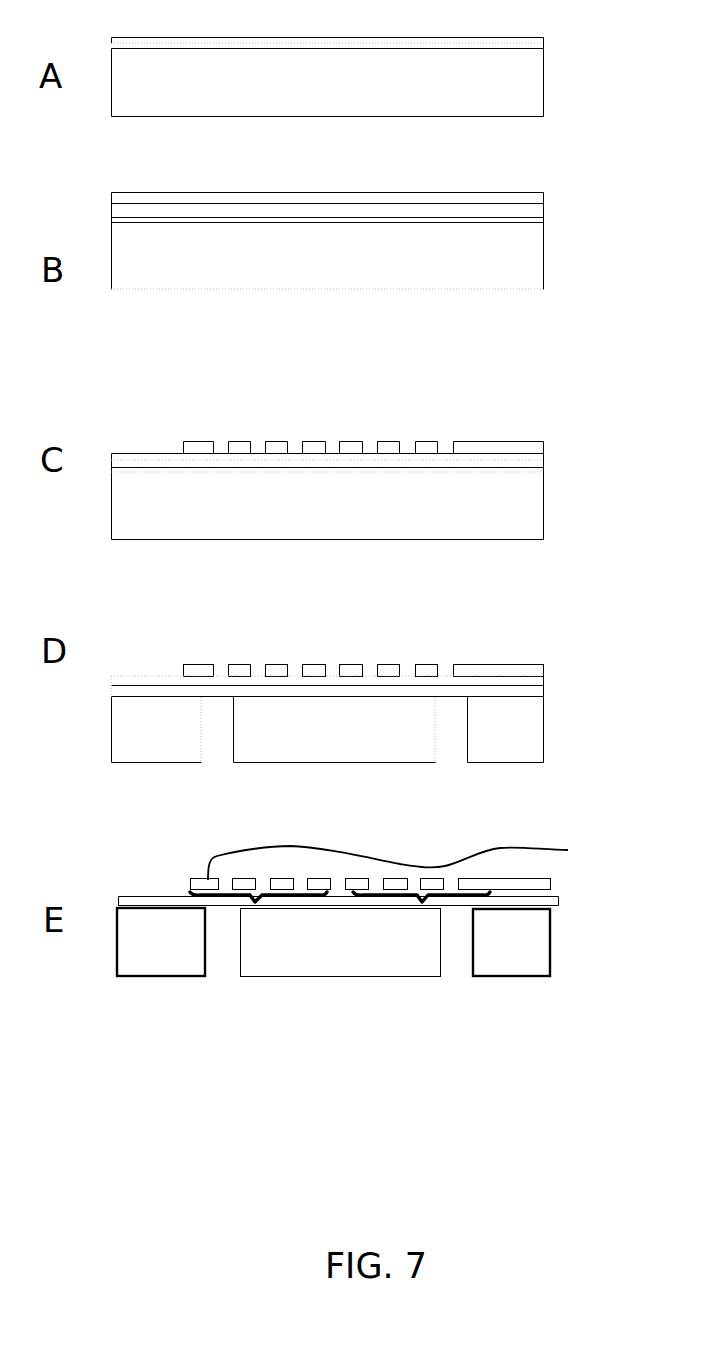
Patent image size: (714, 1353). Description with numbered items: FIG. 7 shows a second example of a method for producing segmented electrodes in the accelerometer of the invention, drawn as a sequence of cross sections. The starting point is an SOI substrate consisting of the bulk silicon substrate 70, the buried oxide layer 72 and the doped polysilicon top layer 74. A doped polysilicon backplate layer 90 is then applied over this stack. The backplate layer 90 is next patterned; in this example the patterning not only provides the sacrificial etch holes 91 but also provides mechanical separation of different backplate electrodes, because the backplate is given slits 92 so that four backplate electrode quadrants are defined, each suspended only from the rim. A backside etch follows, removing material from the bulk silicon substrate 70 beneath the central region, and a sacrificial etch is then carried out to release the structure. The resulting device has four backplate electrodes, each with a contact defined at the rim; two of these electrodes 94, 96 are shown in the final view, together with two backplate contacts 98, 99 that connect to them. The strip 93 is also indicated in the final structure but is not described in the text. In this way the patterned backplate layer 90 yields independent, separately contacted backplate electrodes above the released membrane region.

The bulk silicon substrate 70 is at (532, 96).
The buried oxide layer 72 is at (538, 48).
The doped polysilicon top layer 74 is at (535, 43).
The doped polysilicon backplate layer 90 is at (545, 198).
The sacrificial etch holes 91 is at (217, 448).
The slits 92 is at (330, 447).
The thin membrane strip 93 is at (143, 897).
The backplate electrode 94 is at (255, 902).
The backplate electrode 96 is at (422, 902).
The backplate contact 98 is at (401, 860).
The backplate contact 99 is at (523, 878).